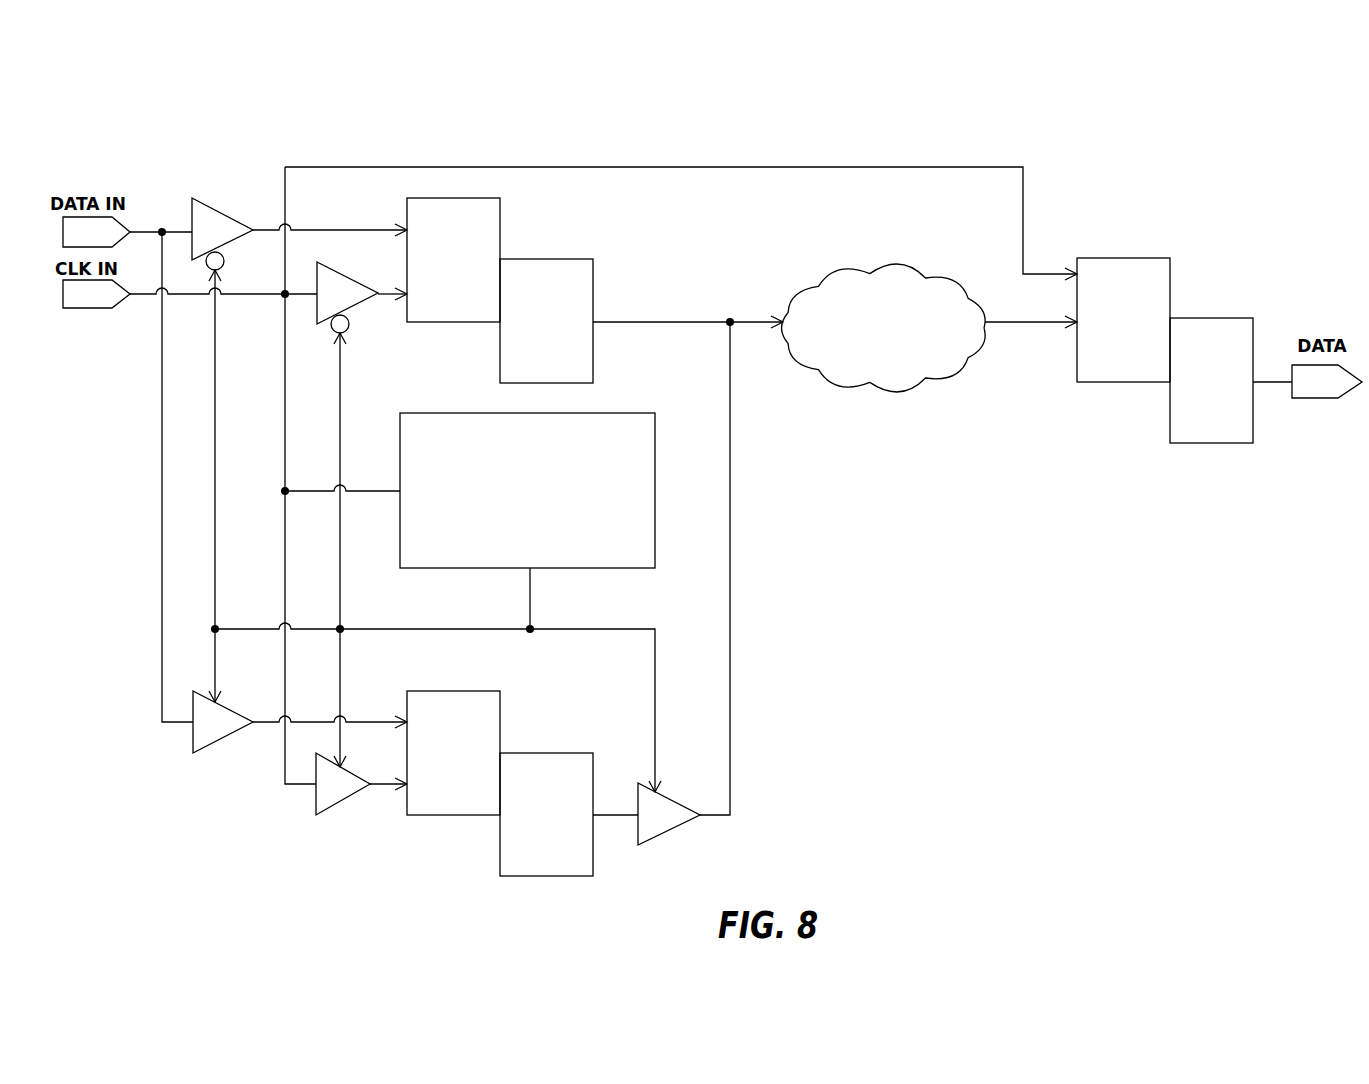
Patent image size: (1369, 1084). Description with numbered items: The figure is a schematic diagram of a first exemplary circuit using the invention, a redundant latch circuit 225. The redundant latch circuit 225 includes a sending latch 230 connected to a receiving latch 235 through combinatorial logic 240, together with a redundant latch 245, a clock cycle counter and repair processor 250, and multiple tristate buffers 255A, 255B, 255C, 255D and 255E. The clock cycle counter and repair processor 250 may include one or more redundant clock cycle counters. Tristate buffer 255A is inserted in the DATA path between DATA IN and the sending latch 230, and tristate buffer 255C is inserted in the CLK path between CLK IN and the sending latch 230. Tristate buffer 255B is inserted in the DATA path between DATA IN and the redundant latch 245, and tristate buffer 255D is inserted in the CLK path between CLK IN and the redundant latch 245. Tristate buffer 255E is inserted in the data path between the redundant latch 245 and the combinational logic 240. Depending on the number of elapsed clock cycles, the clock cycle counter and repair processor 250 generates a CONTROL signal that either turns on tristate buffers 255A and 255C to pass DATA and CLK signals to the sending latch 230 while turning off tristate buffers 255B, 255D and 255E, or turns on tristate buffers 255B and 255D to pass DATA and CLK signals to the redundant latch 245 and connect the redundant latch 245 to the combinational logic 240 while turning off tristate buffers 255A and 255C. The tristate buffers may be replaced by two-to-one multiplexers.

The redundant latch circuit 225 is at (1122, 165).
The sending latch 230 is at (539, 259).
The receiving latch 235 is at (1117, 258).
The combinatorial logic 240 is at (866, 274).
The redundant latch 245 is at (539, 753).
The clock cycle counter and repair processor 250 is at (600, 413).
The tristate buffer 255A is at (203, 198).
The tristate buffer 255B is at (207, 748).
The tristate buffer 255C is at (329, 270).
The tristate buffer 255D is at (330, 809).
The tristate buffer 255E is at (654, 838).